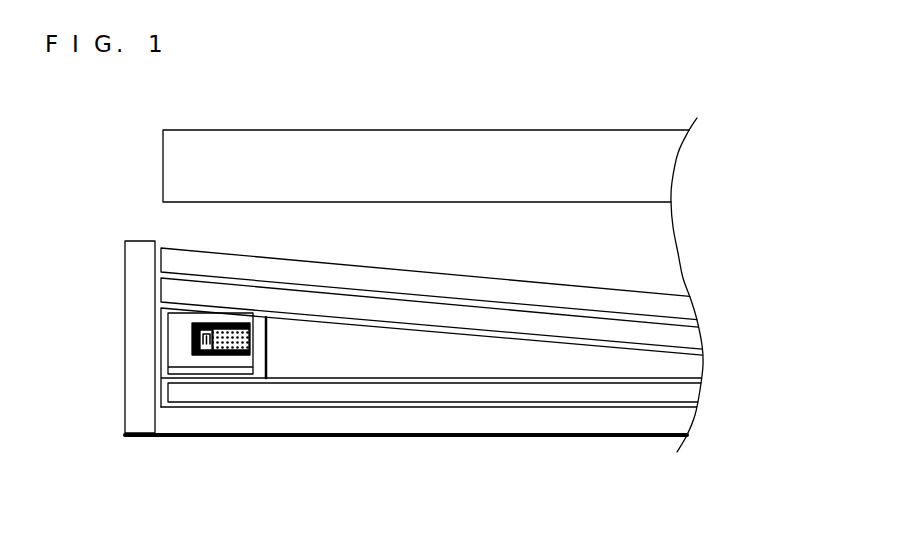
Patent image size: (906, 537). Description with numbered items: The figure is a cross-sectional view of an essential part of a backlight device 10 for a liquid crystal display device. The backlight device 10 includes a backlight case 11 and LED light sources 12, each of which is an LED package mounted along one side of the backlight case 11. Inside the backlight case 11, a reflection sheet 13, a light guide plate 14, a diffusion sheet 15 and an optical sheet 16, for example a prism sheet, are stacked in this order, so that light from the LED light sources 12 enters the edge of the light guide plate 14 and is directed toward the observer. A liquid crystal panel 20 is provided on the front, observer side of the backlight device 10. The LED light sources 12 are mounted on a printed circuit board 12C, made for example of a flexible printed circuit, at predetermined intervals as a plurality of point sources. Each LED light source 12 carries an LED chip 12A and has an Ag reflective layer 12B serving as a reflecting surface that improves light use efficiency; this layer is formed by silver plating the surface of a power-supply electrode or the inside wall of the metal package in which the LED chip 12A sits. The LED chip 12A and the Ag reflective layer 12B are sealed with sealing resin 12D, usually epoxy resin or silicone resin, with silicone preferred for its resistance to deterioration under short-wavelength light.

The backlight device 10 is at (95, 272).
The backlight case 11 is at (126, 345).
The LED light source 12 is at (200, 417).
The LED chip 12A is at (205, 355).
The Ag reflective layer 12B is at (218, 355).
The printed circuit board 12C is at (177, 373).
The sealing resin 12D is at (235, 355).
The reflection sheet 13 is at (682, 395).
The light guide plate 14 is at (682, 370).
The diffusion sheet 15 is at (682, 338).
The optical sheet 16 is at (682, 307).
The liquid crystal panel 20 is at (148, 168).